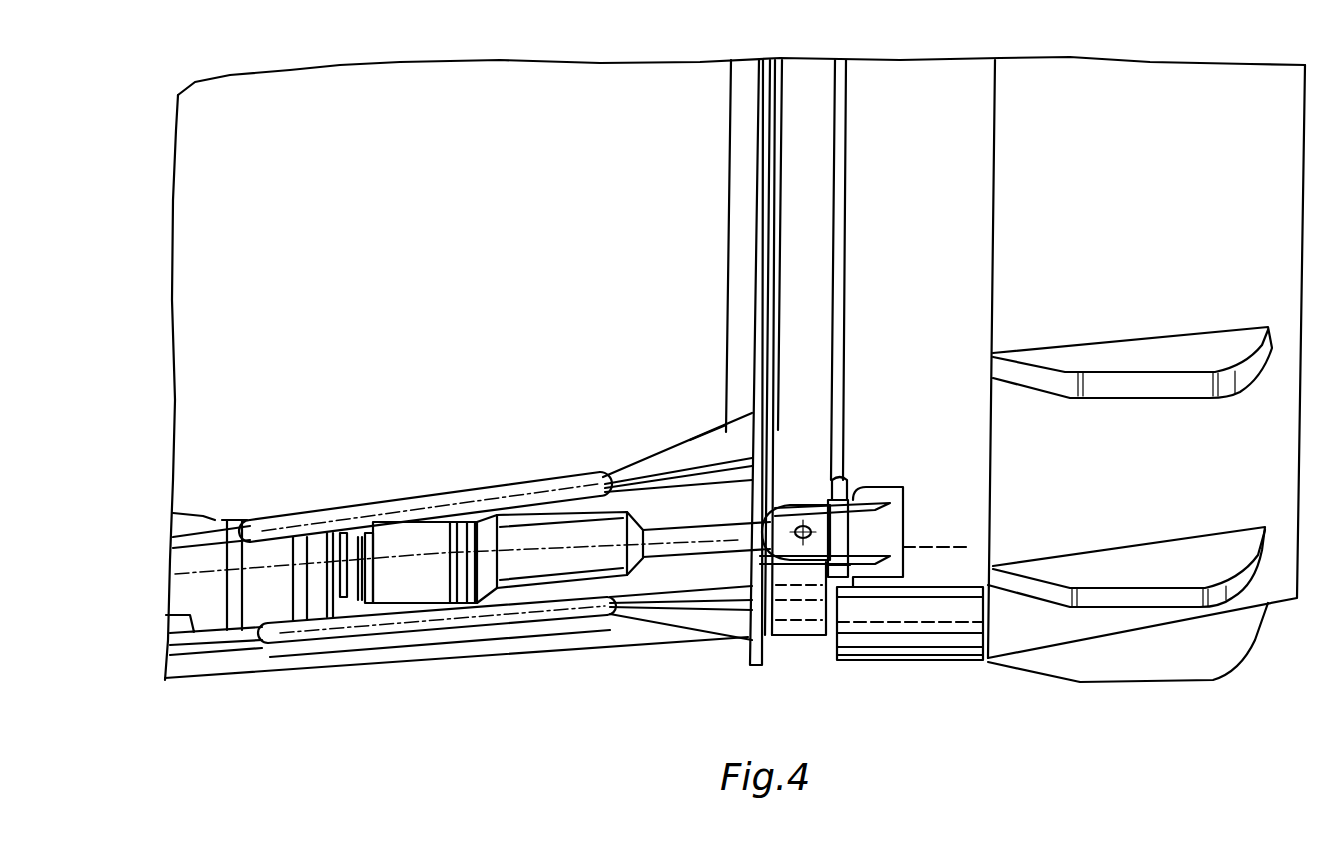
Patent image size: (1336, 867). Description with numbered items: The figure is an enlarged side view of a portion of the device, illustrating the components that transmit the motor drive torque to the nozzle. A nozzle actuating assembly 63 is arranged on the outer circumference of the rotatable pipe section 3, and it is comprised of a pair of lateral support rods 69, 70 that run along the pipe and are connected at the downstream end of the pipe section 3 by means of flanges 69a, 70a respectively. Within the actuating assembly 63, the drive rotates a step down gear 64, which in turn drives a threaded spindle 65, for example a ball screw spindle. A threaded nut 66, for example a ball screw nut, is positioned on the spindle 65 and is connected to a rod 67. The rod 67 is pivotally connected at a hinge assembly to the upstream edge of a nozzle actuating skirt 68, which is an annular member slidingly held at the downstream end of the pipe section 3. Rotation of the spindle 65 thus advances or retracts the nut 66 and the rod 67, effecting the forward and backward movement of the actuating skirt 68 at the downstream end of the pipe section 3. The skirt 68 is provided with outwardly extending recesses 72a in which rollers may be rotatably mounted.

The pipe section 3 is at (253, 115).
The nozzle actuating assembly 63 is at (413, 496).
The step down gear 64 is at (264, 598).
The threaded spindle 65 is at (353, 590).
The threaded nut 66 is at (407, 593).
The rod 67 is at (700, 533).
The nozzle actuating skirt 68 is at (921, 637).
The lateral support rod 69 is at (303, 518).
The flange 69a is at (658, 462).
The lateral support rod 70 is at (547, 617).
The flange 70a is at (673, 618).
The outwardly extending recess 72a is at (1201, 388).